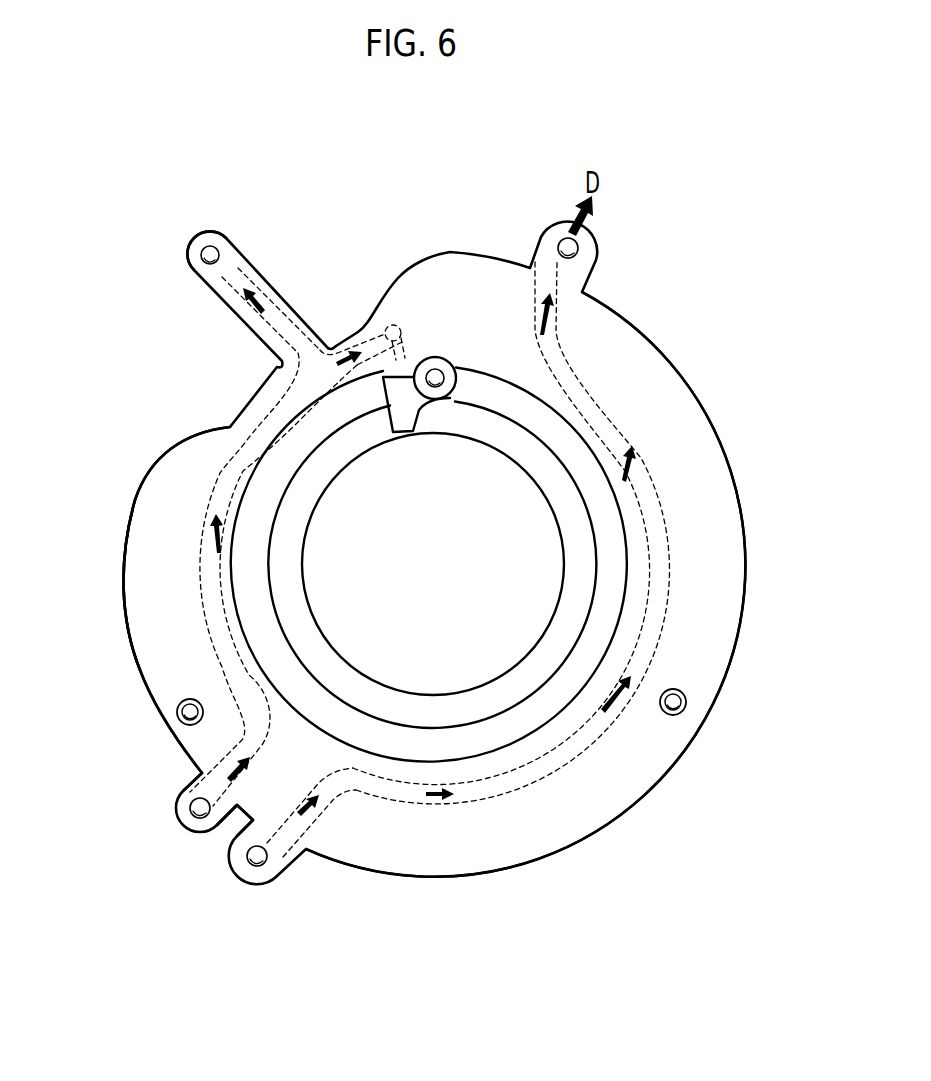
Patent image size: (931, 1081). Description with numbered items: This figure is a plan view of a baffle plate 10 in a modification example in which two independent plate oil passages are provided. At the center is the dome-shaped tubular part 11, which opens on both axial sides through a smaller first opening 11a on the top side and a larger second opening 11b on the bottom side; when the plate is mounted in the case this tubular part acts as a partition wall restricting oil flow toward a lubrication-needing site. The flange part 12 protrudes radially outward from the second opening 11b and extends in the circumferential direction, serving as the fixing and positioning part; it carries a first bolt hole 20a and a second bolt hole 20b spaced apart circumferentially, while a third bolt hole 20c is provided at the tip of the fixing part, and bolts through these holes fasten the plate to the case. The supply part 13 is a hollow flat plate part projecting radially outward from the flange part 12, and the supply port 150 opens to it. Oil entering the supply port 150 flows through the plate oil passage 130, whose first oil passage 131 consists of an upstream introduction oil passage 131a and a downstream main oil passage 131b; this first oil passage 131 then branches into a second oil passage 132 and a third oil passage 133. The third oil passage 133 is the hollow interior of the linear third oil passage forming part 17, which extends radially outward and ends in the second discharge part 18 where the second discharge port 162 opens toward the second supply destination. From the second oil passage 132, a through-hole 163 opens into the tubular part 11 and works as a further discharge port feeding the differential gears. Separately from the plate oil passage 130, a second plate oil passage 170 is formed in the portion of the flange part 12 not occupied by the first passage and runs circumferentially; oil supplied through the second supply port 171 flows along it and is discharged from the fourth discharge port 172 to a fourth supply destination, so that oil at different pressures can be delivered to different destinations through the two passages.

The baffle plate 10 is at (702, 253).
The tubular part 11 is at (560, 700).
The first opening 11a is at (432, 697).
The second opening 11b is at (504, 750).
The flange part 12 is at (710, 577).
The supply part 13 is at (203, 830).
The third oil passage forming part 17 is at (230, 309).
The second discharge part 18 is at (200, 231).
The first bolt hole 20a is at (177, 714).
The second bolt hole 20b is at (687, 702).
The third bolt hole 20c is at (437, 370).
The plate oil passage 130 is at (240, 428).
The first oil passage 131 is at (134, 624).
The introduction oil passage 131a is at (250, 743).
The main oil passage 131b is at (204, 577).
The second oil passage 132 is at (391, 325).
The third oil passage 133 is at (265, 293).
The supply port 150 is at (193, 812).
The second discharge port 162 is at (202, 256).
The through-hole 163 is at (405, 368).
The second plate oil passage 170 is at (670, 513).
The second supply port 171 is at (259, 867).
The fourth discharge port 172 is at (580, 250).